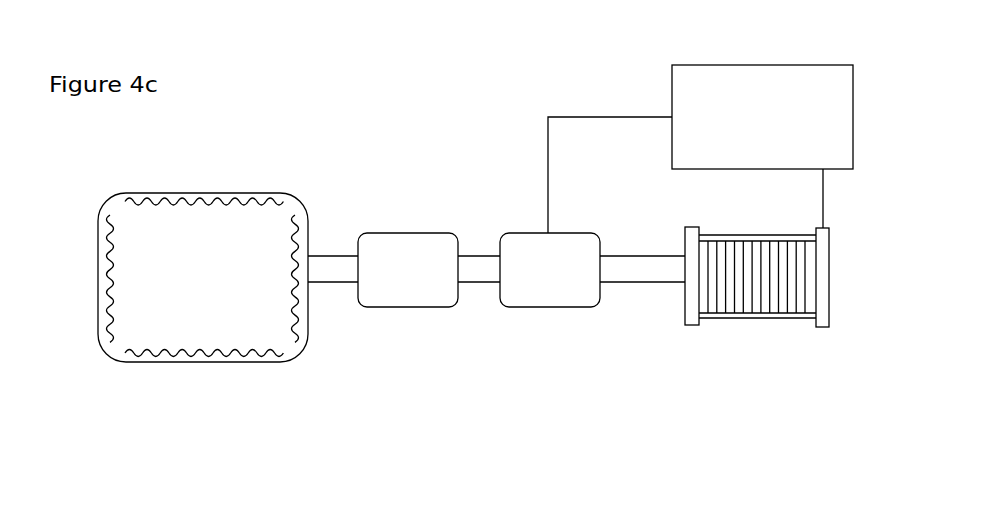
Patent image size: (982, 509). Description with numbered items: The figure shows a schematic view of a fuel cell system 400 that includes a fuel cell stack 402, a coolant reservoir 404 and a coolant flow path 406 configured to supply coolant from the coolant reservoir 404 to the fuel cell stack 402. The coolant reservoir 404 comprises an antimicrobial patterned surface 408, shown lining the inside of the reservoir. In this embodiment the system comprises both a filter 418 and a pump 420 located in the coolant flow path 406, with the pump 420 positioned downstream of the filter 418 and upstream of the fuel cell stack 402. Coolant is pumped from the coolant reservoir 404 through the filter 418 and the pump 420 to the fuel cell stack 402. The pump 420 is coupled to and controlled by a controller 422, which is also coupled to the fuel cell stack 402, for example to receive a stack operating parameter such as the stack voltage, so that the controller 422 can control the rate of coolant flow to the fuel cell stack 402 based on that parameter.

The fuel cell system 400 is at (143, 173).
The fuel cell stack 402 is at (757, 318).
The coolant reservoir 404 is at (262, 362).
The coolant flow path 406 is at (653, 267).
The antimicrobial patterned surface 408 is at (108, 256).
The filter 418 is at (408, 308).
The pump 420 is at (547, 308).
The controller 422 is at (672, 85).